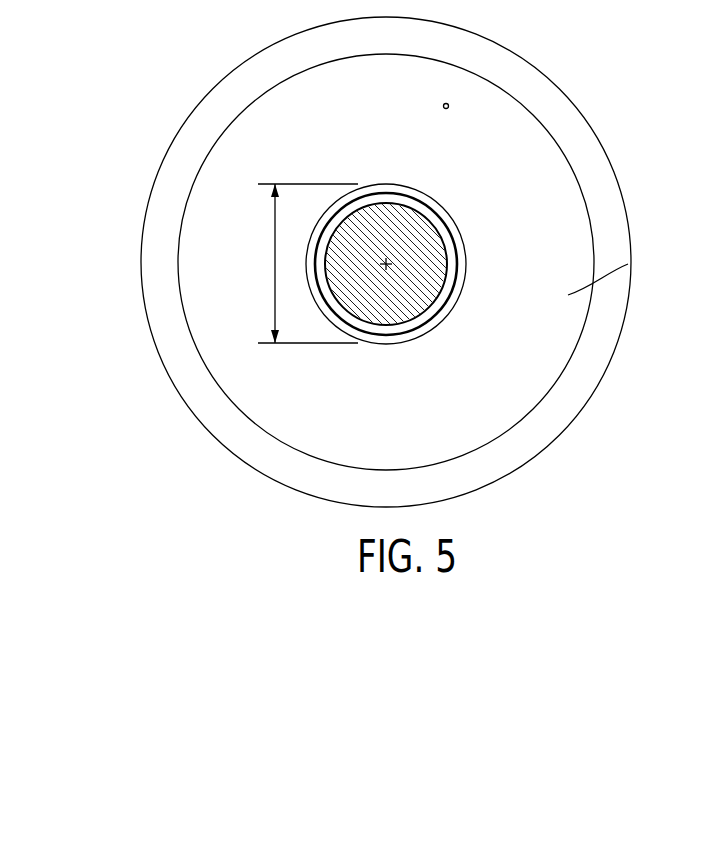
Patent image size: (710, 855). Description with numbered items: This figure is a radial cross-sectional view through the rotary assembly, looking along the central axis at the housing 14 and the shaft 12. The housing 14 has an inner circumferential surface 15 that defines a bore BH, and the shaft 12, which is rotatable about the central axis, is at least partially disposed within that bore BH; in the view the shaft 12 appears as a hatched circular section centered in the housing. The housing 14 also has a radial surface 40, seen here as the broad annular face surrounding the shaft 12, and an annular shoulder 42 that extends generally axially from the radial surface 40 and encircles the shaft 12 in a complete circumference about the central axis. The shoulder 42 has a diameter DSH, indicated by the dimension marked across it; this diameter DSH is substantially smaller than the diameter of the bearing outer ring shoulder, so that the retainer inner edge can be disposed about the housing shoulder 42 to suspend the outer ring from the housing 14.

The shaft 12 is at (440, 268).
The housing 14 is at (229, 69).
The inner circumferential surface 15 is at (377, 56).
The radial surface 40 is at (628, 264).
The annular shoulder 42 is at (443, 203).
The bore BH is at (445, 109).
The shoulder diameter DSH is at (295, 263).